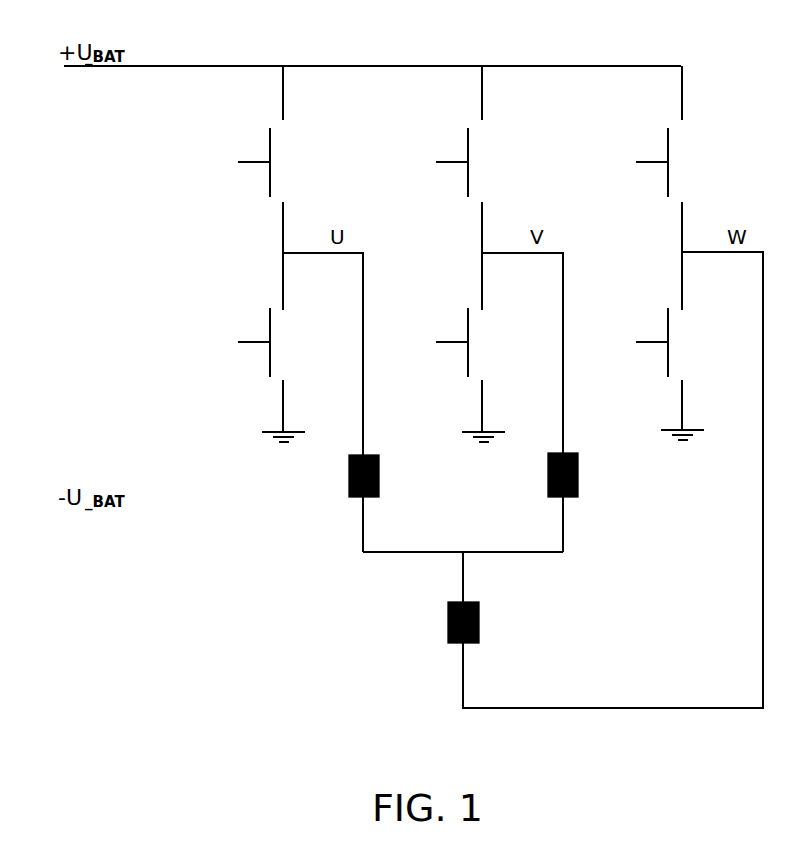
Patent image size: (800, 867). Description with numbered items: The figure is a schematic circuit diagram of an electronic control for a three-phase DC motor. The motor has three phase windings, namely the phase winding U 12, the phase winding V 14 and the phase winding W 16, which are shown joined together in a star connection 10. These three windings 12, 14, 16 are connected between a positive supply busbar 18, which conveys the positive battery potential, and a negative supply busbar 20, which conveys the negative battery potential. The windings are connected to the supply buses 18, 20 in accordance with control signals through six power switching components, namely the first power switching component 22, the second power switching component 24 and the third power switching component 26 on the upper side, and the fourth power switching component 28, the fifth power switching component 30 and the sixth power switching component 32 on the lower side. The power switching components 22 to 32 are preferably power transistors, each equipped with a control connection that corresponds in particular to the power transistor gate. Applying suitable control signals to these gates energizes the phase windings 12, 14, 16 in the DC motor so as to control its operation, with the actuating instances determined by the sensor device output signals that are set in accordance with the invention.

The star connection 10 is at (460, 549).
The phase winding U 12 is at (377, 455).
The phase winding V 14 is at (577, 453).
The phase winding W 16 is at (481, 623).
The positive supply busbar 18 is at (222, 66).
The negative supply busbar 20 is at (298, 441).
The power switching component T1 22 is at (283, 158).
The power switching component T2 24 is at (482, 158).
The power switching component T3 26 is at (682, 158).
The power switching component T4 28 is at (283, 347).
The power switching component T5 30 is at (482, 347).
The power switching component T6 32 is at (682, 347).